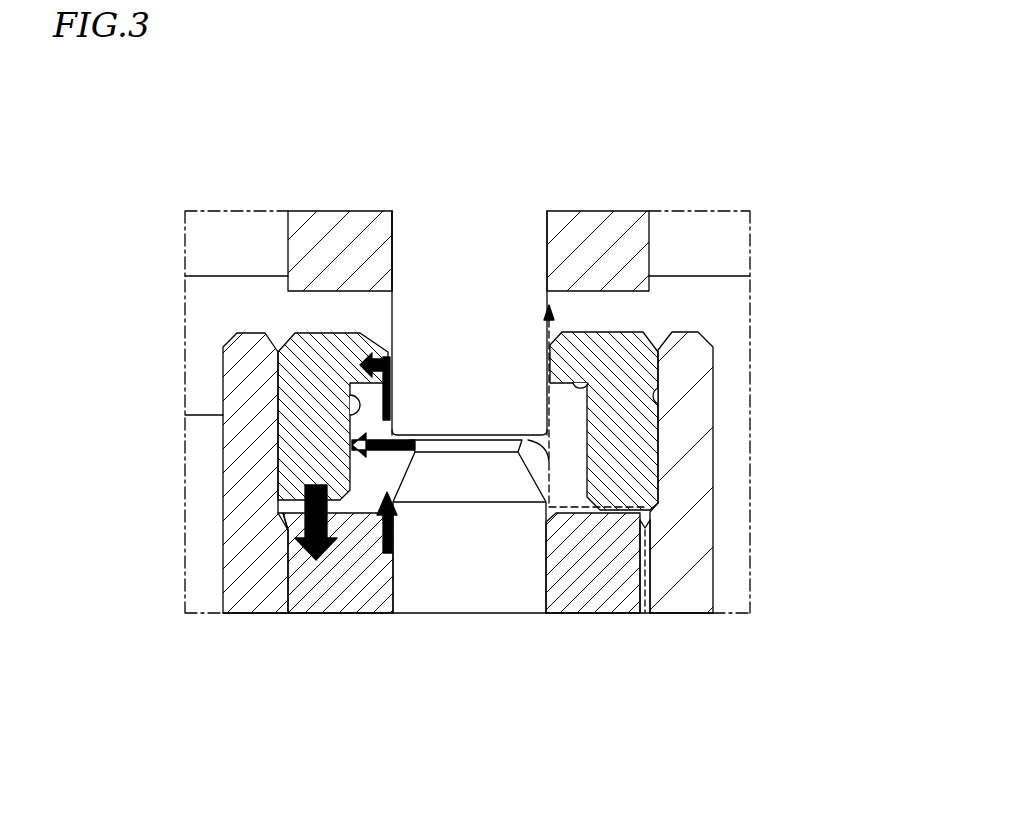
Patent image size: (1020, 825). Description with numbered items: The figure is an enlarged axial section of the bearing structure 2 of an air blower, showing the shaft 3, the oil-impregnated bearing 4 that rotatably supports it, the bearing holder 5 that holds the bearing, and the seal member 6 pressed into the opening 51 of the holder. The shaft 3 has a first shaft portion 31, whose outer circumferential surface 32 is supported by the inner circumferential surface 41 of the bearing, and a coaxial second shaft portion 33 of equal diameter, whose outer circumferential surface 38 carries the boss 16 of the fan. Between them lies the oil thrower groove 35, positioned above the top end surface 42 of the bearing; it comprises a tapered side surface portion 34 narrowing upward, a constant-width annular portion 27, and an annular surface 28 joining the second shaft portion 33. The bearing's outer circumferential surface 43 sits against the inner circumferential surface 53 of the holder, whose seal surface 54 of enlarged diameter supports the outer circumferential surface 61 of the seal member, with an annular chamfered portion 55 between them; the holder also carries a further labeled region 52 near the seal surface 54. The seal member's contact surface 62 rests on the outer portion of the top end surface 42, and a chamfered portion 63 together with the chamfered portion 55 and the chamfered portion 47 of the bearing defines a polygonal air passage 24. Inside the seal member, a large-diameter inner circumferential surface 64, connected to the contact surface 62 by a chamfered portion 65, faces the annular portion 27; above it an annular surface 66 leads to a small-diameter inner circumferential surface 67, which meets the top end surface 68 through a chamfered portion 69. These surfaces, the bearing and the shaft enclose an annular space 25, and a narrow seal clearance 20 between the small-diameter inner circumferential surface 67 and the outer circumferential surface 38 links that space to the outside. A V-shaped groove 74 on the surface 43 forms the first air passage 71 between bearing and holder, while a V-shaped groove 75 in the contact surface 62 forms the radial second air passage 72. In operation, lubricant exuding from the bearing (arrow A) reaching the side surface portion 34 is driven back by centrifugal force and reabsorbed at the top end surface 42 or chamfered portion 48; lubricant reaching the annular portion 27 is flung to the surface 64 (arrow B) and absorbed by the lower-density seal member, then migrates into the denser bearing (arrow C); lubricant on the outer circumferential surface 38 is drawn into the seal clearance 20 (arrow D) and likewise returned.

The bearing structure 2 is at (239, 194).
The shaft 3 is at (518, 193).
The oil-impregnated bearing 4 is at (585, 630).
The bearing holder 5 is at (729, 560).
The seal member 6 is at (673, 316).
The boss 16 is at (325, 225).
The seal clearance 20 is at (545, 350).
The air passage 24 is at (265, 518).
The annular space 25 is at (345, 380).
The annular portion 27 is at (483, 447).
The annular surface 28 is at (590, 458).
The first shaft portion 31 is at (439, 630).
The outer circumferential surface 32 is at (382, 555).
The second shaft portion 33 is at (490, 204).
The side surface portion 34 is at (443, 480).
The oil thrower groove 35 is at (469, 432).
The outer circumferential surface 38 is at (388, 243).
The inner circumferential surface 41 is at (545, 560).
The top end surface 42 is at (340, 468).
The outer circumferential surface 43 is at (275, 573).
The chamfered portion 47 is at (278, 540).
The chamfered portion 48 is at (545, 525).
The opening 51 is at (663, 352).
The recess 52 is at (660, 373).
The inner circumferential surface 53 is at (293, 596).
The seal surface 54 is at (713, 413).
The chamfered portion 55 is at (668, 505).
The outer circumferential surface 61 is at (662, 370).
The contact surface 62 is at (608, 540).
The chamfered portion 63 is at (290, 527).
The large-diameter inner circumferential surface 64 is at (352, 405).
The chamfered portion 65 is at (358, 522).
The annular surface 66 is at (639, 316).
The small-diameter inner circumferential surface 67 is at (393, 358).
The top end surface 68 is at (587, 333).
The chamfered portion 69 is at (552, 337).
The air passage 71 is at (650, 583).
The air passage 72 is at (630, 515).
The V-shaped groove 74 is at (645, 575).
The V-shaped groove 75 is at (650, 510).
The arrow A is at (388, 556).
The arrow B is at (348, 443).
The arrow C is at (280, 506).
The arrow D is at (340, 333).